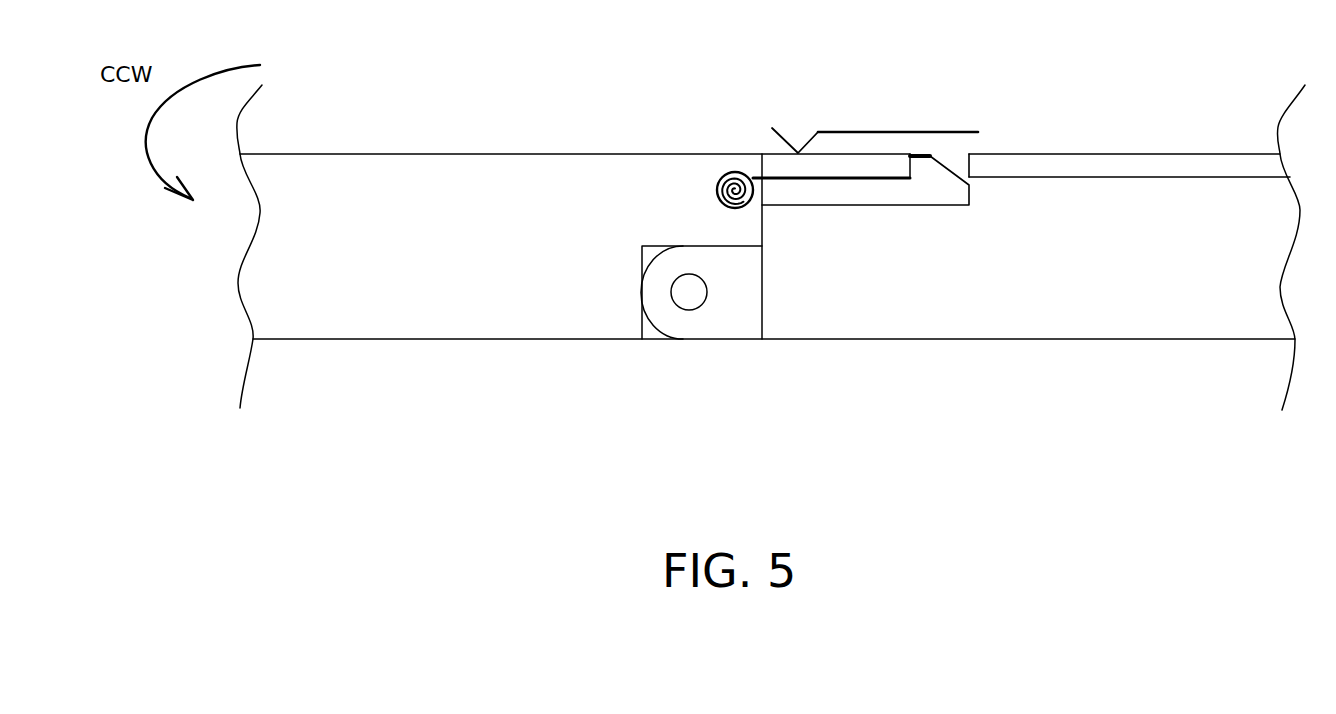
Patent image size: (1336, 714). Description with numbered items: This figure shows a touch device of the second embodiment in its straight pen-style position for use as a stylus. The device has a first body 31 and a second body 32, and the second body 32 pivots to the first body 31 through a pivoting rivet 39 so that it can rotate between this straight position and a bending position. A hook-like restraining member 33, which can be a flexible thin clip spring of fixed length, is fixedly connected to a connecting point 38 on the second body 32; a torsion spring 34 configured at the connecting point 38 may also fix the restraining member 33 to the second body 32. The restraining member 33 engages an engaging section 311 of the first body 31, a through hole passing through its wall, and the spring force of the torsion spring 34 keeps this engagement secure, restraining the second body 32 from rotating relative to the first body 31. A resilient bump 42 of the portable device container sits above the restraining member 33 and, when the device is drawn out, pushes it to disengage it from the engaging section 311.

The first body 31 is at (1120, 200).
The engaging section 311 is at (955, 173).
The second body 32 is at (488, 203).
The restraining member 33 is at (933, 186).
The torsion spring 34 is at (718, 183).
The connecting point 38 is at (738, 173).
The pivoting rivet 39 is at (690, 295).
The resilient bump 42 is at (865, 130).